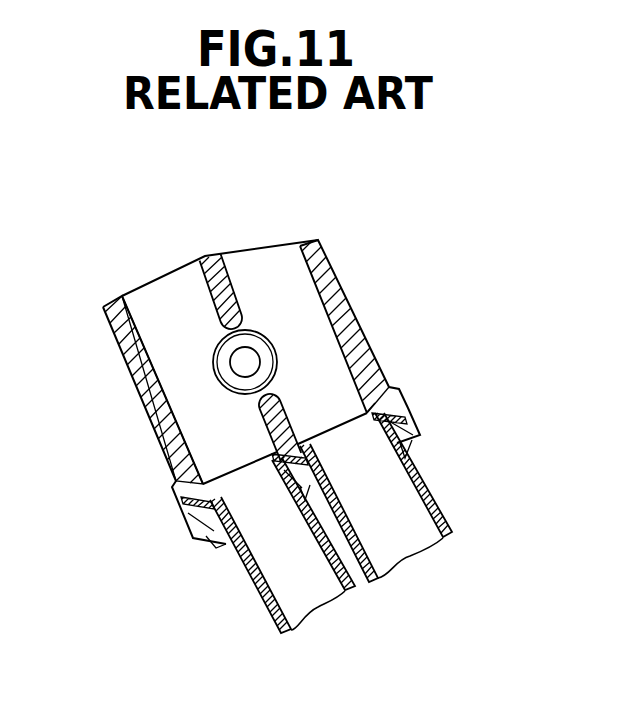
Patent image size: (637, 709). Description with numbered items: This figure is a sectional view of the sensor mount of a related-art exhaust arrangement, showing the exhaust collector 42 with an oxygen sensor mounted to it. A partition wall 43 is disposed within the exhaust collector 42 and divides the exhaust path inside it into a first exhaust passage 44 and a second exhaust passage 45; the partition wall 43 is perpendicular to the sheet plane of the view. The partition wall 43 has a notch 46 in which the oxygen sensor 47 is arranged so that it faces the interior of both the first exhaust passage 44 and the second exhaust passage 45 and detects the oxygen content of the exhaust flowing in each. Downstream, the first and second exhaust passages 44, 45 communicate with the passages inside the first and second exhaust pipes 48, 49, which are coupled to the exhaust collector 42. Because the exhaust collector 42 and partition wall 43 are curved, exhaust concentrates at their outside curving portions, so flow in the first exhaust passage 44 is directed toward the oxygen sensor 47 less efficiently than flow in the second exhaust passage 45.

The exhaust collector 42 is at (338, 270).
The partition wall 43 is at (217, 273).
The first exhaust passage 44 is at (192, 382).
The second exhaust passage 45 is at (302, 350).
The notch 46 is at (258, 400).
The oxygen sensor 47 is at (240, 361).
The first exhaust pipe 48 is at (262, 558).
The second exhaust pipe 49 is at (405, 512).